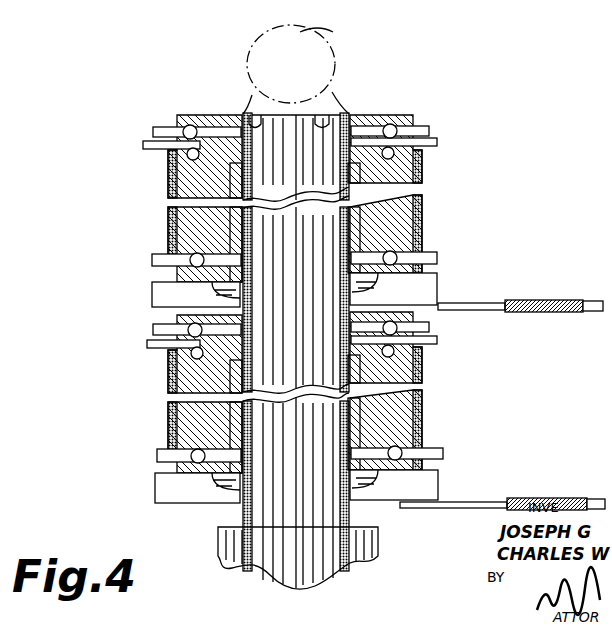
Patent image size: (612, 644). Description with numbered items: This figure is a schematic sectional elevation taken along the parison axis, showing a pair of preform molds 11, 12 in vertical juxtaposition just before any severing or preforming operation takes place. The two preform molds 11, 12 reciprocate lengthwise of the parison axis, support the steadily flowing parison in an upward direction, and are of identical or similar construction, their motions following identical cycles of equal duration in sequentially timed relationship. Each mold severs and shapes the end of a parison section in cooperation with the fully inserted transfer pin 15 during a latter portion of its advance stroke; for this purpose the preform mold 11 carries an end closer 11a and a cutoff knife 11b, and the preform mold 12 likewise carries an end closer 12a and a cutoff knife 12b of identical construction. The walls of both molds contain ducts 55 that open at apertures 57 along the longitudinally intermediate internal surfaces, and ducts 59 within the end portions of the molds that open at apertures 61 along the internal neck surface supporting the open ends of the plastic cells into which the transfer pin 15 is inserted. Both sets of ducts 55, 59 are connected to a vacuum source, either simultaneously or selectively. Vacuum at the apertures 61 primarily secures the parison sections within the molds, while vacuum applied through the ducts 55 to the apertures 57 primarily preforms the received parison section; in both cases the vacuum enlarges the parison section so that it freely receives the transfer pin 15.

The preform mold 11 is at (442, 396).
The end closer 11a is at (440, 483).
The cutoff knife 11b is at (414, 508).
The preform mold 12 is at (443, 231).
The end closer 12a is at (437, 281).
The cutoff knife 12b is at (440, 304).
The transfer pin 15 is at (332, 70).
The ducts 55 is at (170, 182).
The apertures 57 is at (287, 438).
The ducts 59 is at (190, 124).
The apertures 61 is at (254, 114).